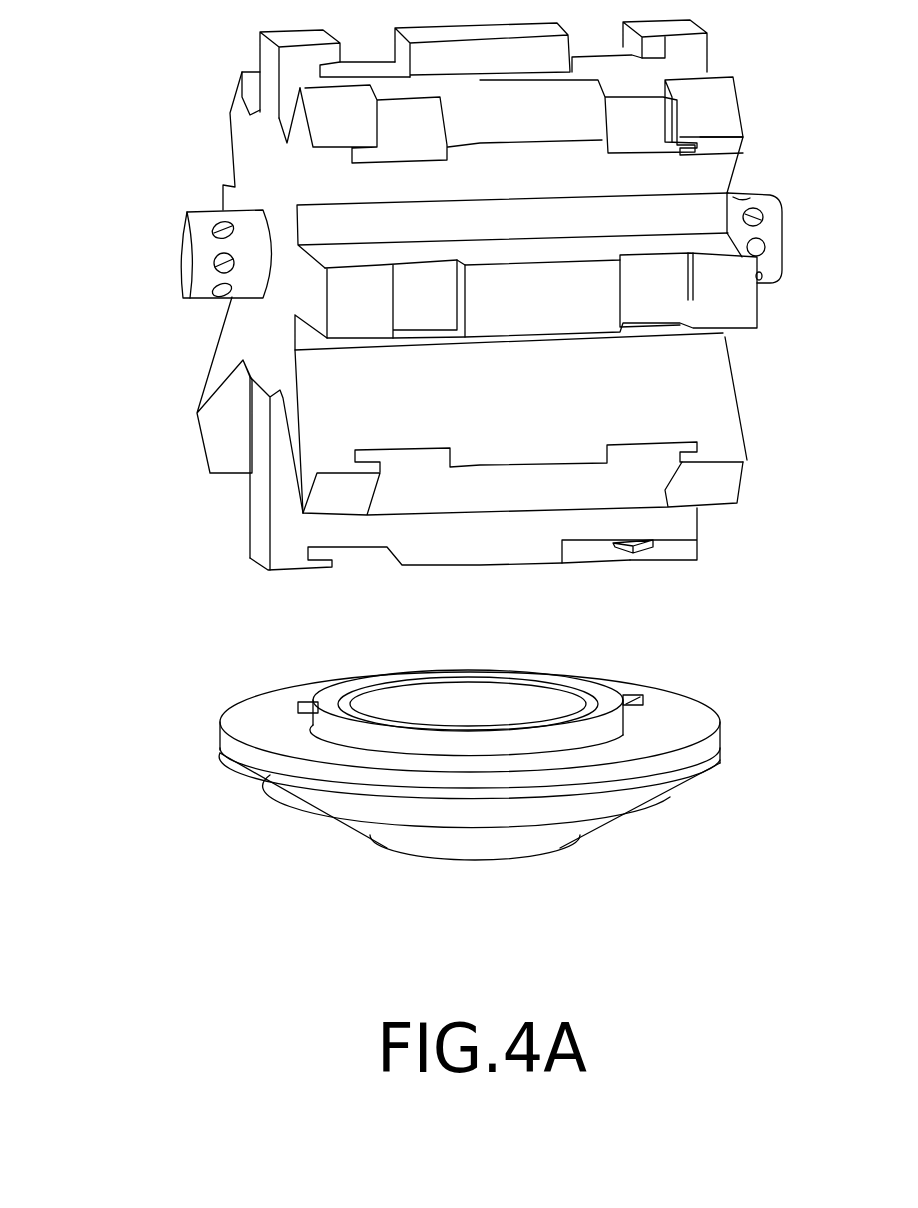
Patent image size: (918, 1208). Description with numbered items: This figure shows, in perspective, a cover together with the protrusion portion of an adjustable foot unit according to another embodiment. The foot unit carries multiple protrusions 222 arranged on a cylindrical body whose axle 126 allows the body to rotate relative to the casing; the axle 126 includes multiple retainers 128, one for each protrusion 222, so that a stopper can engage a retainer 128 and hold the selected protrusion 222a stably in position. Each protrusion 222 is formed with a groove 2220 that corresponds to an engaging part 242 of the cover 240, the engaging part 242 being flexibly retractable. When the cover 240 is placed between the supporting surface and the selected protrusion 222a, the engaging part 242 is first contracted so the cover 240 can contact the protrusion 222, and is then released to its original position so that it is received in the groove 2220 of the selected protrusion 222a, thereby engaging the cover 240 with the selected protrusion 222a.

The protrusion 222 is at (710, 110).
The selected protrusion 222a is at (293, 533).
The groove 2220 is at (607, 537).
The axle 126 is at (143, 304).
The retainers 128 is at (188, 293).
The cover 240 is at (511, 768).
The engaging part 242 is at (643, 700).